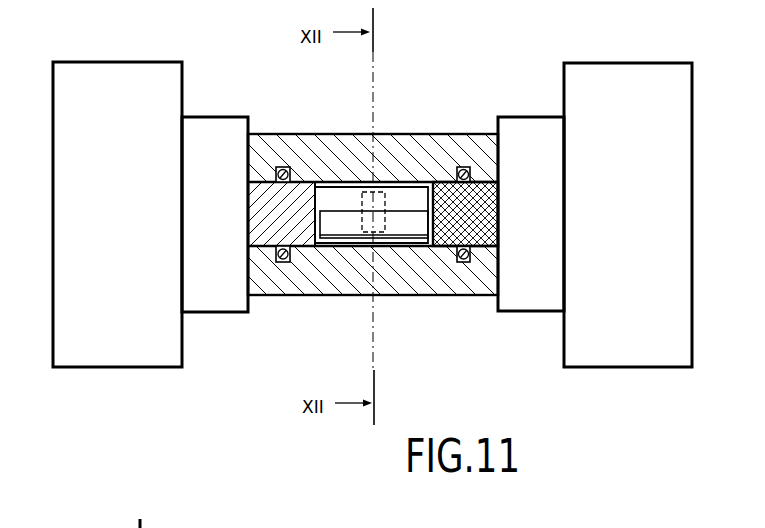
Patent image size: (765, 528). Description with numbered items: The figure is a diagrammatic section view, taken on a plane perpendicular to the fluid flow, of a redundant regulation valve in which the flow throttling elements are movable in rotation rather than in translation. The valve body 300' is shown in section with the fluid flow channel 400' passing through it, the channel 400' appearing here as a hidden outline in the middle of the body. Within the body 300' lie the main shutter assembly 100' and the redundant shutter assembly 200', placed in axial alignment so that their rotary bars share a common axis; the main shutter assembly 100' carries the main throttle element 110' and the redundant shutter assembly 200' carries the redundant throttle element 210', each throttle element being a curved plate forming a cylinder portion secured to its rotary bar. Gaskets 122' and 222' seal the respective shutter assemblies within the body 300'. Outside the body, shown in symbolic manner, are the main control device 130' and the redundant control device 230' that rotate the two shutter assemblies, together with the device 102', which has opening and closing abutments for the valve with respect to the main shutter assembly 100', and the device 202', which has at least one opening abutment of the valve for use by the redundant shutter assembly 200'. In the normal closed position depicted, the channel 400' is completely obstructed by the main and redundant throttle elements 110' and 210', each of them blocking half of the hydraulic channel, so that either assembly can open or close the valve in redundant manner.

The redundant control device 230' is at (117, 194).
The main control device 130' is at (628, 192).
The device having at least one opening abutment 202' is at (215, 190).
The device having opening and closing abutments 102' is at (531, 188).
The valve body 300' is at (373, 180).
The redundant shutter assembly 200' is at (279, 267).
The gasket 222' is at (309, 259).
The gasket 122' is at (476, 163).
The redundant throttle element 210' is at (379, 154).
The main throttle element 110' is at (404, 281).
The fluid flow channel 400' is at (395, 272).
The main shutter assembly 100' is at (488, 264).